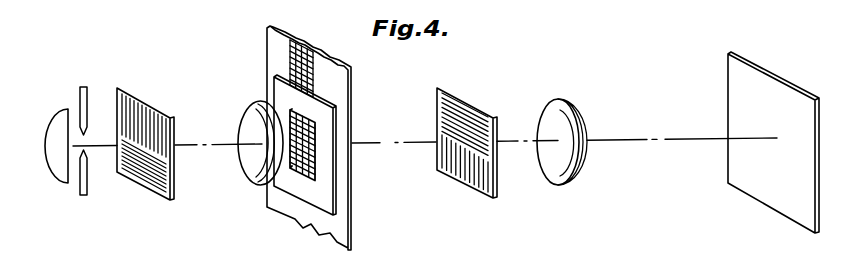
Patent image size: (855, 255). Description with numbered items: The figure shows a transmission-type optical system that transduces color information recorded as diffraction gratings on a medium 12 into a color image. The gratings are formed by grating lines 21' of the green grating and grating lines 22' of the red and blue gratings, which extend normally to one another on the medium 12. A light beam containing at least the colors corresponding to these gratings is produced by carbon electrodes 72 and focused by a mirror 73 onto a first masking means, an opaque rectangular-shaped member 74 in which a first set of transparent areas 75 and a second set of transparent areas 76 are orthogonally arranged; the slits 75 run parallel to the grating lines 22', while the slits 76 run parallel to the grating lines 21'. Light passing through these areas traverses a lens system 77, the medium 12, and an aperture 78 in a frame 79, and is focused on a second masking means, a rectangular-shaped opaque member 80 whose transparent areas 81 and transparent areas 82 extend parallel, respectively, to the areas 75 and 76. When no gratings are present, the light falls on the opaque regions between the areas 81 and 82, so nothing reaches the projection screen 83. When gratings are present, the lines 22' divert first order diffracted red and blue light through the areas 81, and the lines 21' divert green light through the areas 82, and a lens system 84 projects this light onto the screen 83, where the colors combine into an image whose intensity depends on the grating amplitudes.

The medium 12 is at (336, 222).
The grating lines of the green diffraction grating 21' is at (318, 55).
The grating lines of the red and blue diffraction gratings 22' is at (343, 68).
The carbon electrodes 72 is at (88, 162).
The mirror 73 is at (57, 118).
The opaque rectangular-shaped member 74 is at (147, 104).
The first set of transparent areas 75 is at (157, 131).
The second set of transparent areas 76 is at (146, 171).
The lens system 77 is at (250, 163).
The aperture 78 is at (311, 154).
The frame 79 is at (306, 190).
The rectangular-shaped opaque member 80 is at (487, 116).
The transparent areas 81 is at (463, 170).
The transparent areas 82 is at (455, 108).
The projection screen 83 is at (745, 184).
The lens system 84 is at (574, 166).